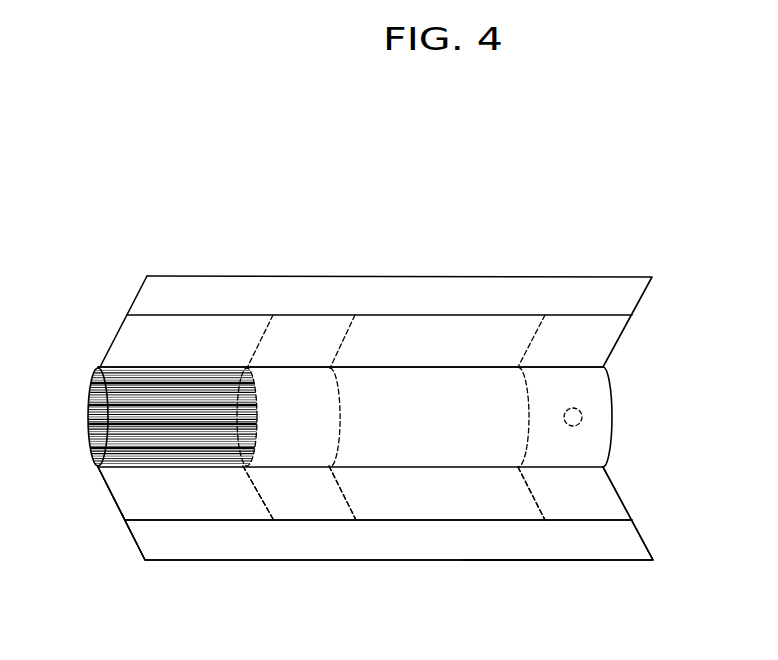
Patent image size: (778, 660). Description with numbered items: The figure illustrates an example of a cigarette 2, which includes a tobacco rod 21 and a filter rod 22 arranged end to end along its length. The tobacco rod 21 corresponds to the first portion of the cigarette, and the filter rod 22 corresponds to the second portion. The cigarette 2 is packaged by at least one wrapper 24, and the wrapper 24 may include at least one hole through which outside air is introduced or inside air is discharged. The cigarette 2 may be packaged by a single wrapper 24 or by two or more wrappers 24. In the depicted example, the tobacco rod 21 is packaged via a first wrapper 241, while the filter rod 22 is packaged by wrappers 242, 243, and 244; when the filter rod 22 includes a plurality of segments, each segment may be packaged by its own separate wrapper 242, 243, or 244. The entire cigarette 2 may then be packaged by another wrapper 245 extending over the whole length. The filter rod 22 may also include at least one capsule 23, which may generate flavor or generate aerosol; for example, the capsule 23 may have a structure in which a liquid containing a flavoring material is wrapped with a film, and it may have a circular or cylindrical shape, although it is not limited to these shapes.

The cigarette 2 is at (637, 243).
The tobacco rod 21 is at (100, 420).
The filter rod 22 is at (415, 387).
The capsule 23 is at (582, 417).
The wrapper 24 is at (606, 461).
The first wrapper 241 is at (190, 502).
The wrapper 242 is at (302, 502).
The wrapper 243 is at (445, 503).
The wrapper 244 is at (582, 503).
The wrapper 245 is at (528, 550).